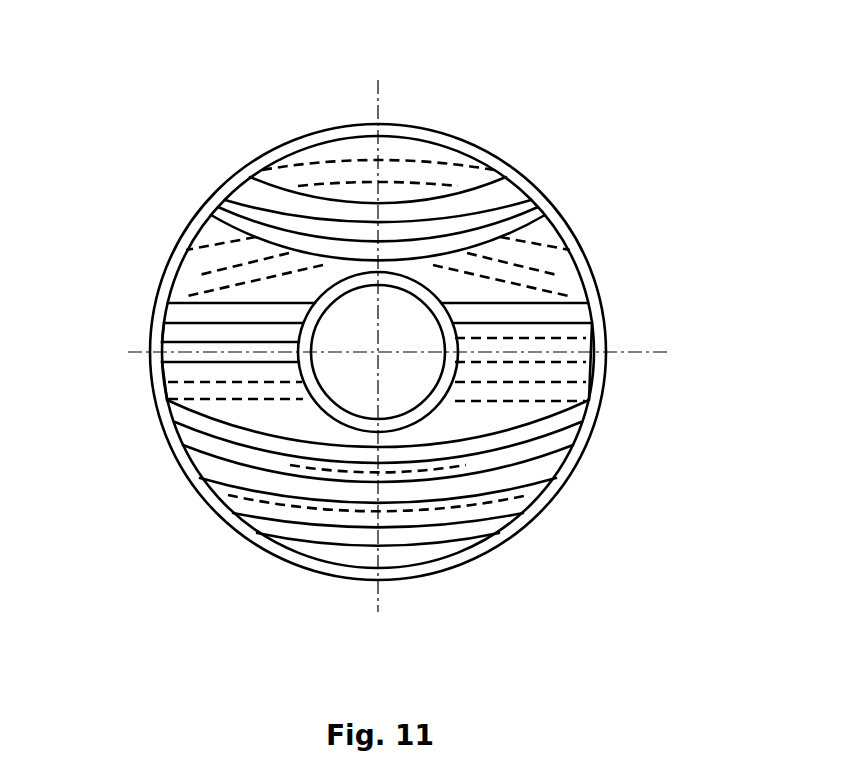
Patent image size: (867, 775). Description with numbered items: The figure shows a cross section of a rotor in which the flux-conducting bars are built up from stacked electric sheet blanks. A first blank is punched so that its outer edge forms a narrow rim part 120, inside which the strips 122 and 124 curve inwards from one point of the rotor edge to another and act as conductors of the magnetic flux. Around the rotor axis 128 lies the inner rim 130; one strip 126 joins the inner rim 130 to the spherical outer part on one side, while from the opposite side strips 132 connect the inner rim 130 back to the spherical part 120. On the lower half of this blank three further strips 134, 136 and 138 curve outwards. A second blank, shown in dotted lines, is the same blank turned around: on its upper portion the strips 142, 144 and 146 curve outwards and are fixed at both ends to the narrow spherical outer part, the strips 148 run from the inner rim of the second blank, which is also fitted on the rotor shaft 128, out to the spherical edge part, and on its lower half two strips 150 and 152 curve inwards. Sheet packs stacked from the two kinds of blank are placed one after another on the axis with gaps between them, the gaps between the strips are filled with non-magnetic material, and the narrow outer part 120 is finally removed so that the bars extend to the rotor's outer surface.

The rim part 120 is at (460, 137).
The strip 122 is at (468, 188).
The strip 124 is at (493, 230).
The strip 126 is at (523, 313).
The rotor axis 128 is at (392, 370).
The inner rim 130 is at (408, 412).
The strips 132 is at (237, 352).
The strip 134 is at (323, 530).
The strip 136 is at (263, 477).
The strip 138 is at (250, 428).
The strip 142 is at (323, 175).
The strip 144 is at (222, 228).
The strip 146 is at (233, 317).
The strips 148 is at (250, 392).
The strip 150 is at (465, 513).
The strip 152 is at (517, 493).